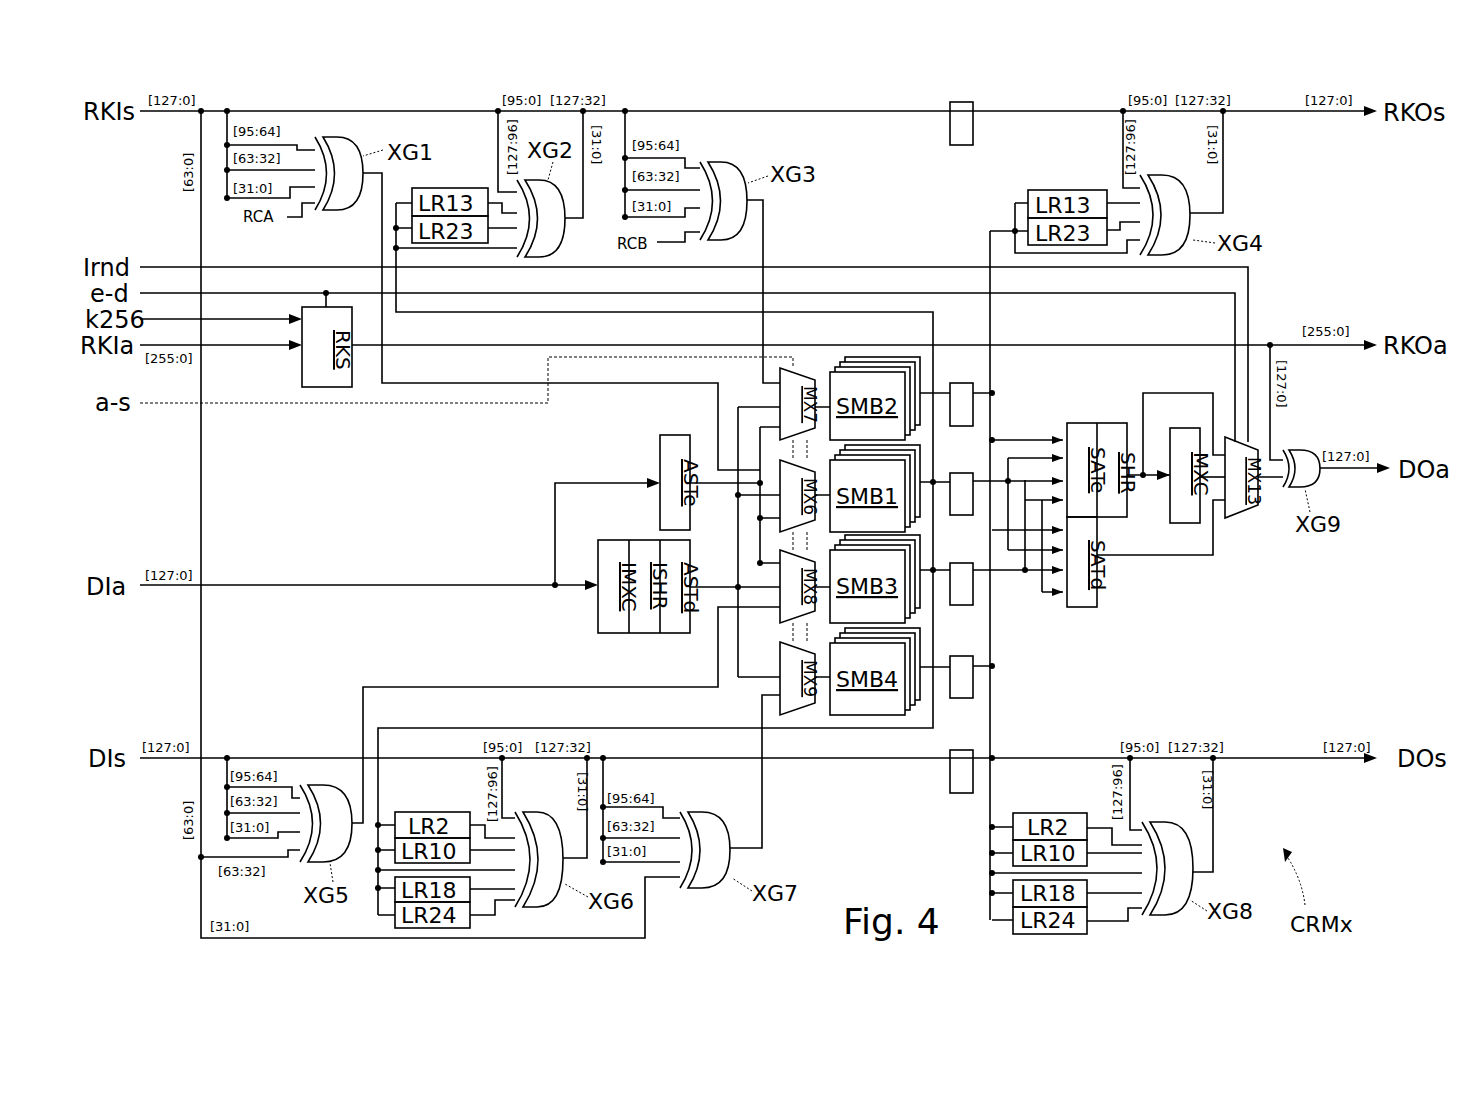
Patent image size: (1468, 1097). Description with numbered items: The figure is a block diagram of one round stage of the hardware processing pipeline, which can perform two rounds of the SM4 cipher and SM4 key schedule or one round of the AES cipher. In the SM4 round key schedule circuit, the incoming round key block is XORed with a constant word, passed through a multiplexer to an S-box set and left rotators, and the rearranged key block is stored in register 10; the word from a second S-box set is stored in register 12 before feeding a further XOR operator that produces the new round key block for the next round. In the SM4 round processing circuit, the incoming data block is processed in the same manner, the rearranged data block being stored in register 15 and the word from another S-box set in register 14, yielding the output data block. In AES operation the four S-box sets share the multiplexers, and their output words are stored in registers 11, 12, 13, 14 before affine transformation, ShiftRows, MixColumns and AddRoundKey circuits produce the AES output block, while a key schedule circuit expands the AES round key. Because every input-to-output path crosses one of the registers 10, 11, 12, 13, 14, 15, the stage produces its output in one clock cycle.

The register 10 is at (963, 148).
The register 11 is at (957, 472).
The register 12 is at (974, 388).
The register 13 is at (958, 562).
The register 14 is at (960, 656).
The register 15 is at (958, 794).